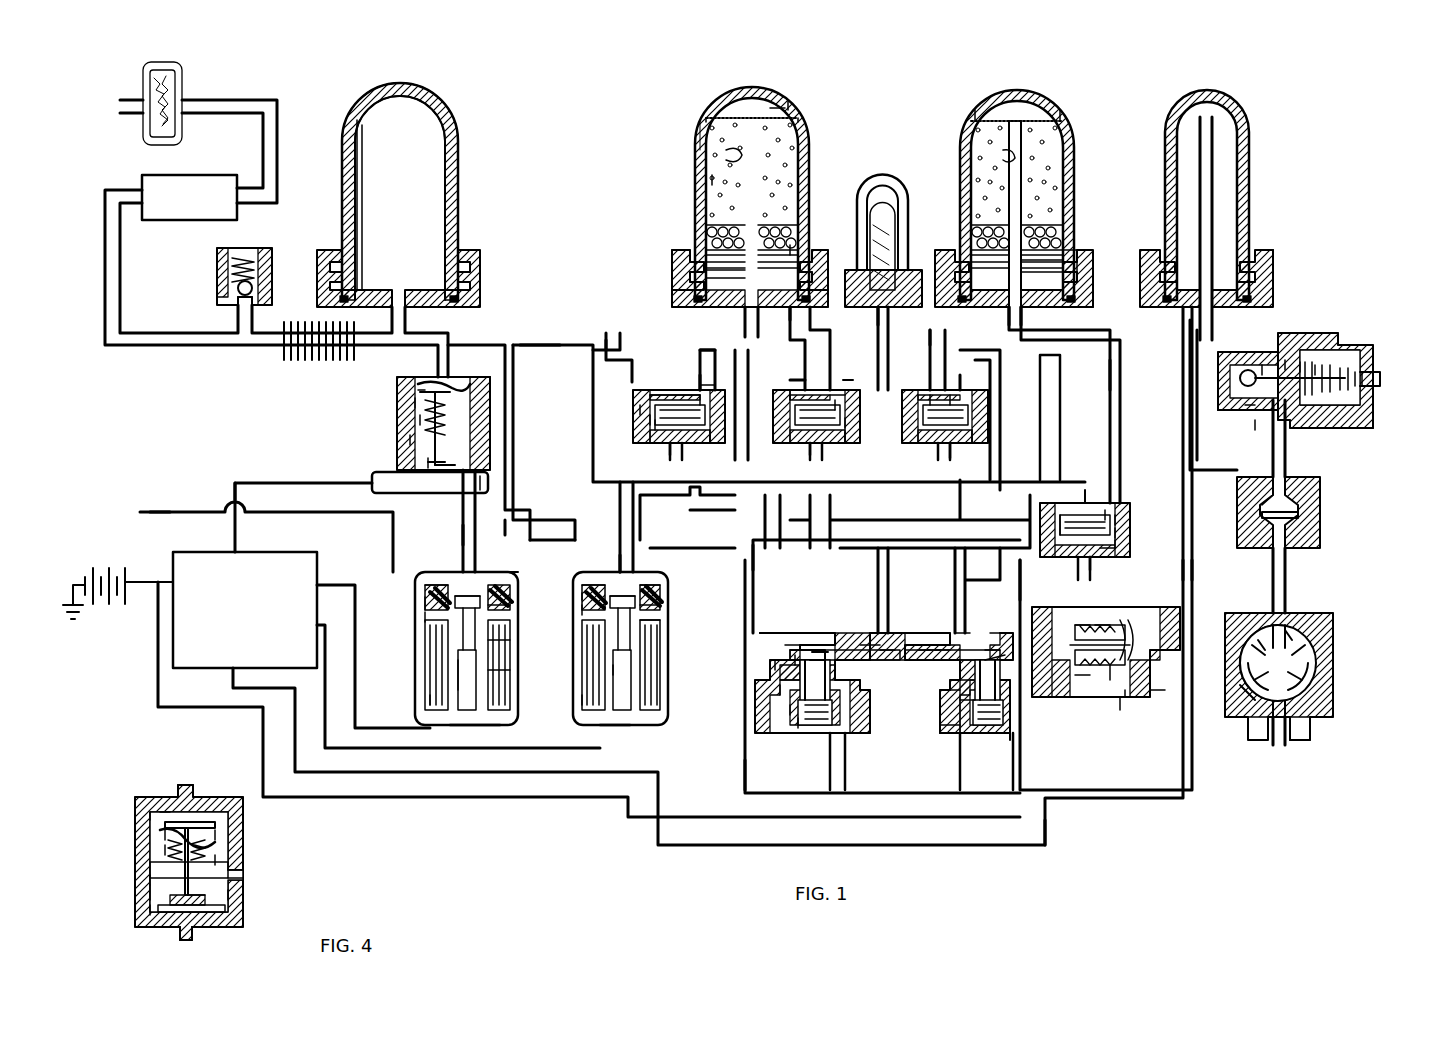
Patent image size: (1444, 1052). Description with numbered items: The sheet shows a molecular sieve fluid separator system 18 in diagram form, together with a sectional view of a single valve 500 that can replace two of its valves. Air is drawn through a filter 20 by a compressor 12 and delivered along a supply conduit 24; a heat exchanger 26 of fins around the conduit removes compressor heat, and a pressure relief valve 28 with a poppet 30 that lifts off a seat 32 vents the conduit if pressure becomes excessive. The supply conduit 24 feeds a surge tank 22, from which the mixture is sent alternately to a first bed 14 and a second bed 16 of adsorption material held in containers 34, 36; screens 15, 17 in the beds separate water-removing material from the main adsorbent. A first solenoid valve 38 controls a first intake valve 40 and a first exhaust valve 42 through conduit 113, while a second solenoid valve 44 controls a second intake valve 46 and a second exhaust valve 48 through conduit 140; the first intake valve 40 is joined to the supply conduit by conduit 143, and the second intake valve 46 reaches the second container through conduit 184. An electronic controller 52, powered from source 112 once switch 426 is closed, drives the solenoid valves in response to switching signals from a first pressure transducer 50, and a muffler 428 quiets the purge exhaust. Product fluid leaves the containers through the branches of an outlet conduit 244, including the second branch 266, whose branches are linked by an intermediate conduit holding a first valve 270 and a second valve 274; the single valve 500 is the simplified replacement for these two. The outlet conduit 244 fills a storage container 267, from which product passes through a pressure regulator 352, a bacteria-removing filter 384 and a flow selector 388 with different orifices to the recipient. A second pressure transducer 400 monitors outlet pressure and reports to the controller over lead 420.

In FIG. 1, the compressor 12 is at (193, 182).
In FIG. 1, the first bed of adsorption material 14 is at (720, 122).
In FIG. 1, the screen 15 is at (712, 235).
In FIG. 1, the second bed of adsorption material 16 is at (1063, 130).
In FIG. 1, the screen 17 is at (1060, 230).
In FIG. 1, the fluid separator system 18 is at (560, 870).
In FIG. 1, the filter 20 is at (185, 72).
In FIG. 1, the surge tank 22 is at (455, 141).
In FIG. 1, the supply conduit 24 is at (548, 345).
In FIG. 1, the heat exchanger 26 is at (282, 352).
In FIG. 1, the pressure relief valve 28 is at (264, 248).
In FIG. 1, the poppet 30 is at (228, 291).
In FIG. 1, the seat 32 is at (232, 300).
In FIG. 1, the container 34 is at (808, 135).
In FIG. 1, the container 36 is at (1030, 92).
In FIG. 1, the first solenoid valve 38 is at (690, 648).
In FIG. 1, the first intake valve 40 is at (658, 455).
In FIG. 1, the first exhaust valve 42 is at (926, 455).
In FIG. 1, the second solenoid valve 44 is at (398, 648).
In FIG. 1, the second intake valve 46 is at (1128, 572).
In FIG. 1, the second exhaust valve 48 is at (792, 455).
In FIG. 1, the first pressure transducer 50 is at (350, 432).
In FIG. 1, the electronic controller 52 is at (130, 680).
In FIG. 1, the source 112 is at (103, 570).
In FIG. 1, the conduit 113 is at (705, 510).
In FIG. 1, the conduit 140 is at (550, 548).
In FIG. 1, the conduit 143 is at (612, 350).
In FIG. 1, the conduit 184 is at (1112, 372).
In FIG. 1, the outlet conduit 244 is at (1192, 567).
In FIG. 1, the second branch 266 is at (1040, 411).
In FIG. 1, the storage container 267 is at (1250, 146).
In FIG. 1, the first valve 270 is at (810, 760).
In FIG. 1, the second valve 274 is at (935, 770).
In FIG. 1, the pressure regulator 352 is at (1390, 321).
In FIG. 1, the filter 384 is at (1320, 533).
In FIG. 1, the flow selector 388 is at (1333, 653).
In FIG. 1, the second pressure transducer 400 is at (1085, 697).
In FIG. 1, the lead 420 is at (1045, 830).
In FIG. 1, the switch 426 is at (140, 540).
In FIG. 1, the muffler 428 is at (872, 190).
In FIG. 4, the single valve 500 is at (385, 865).